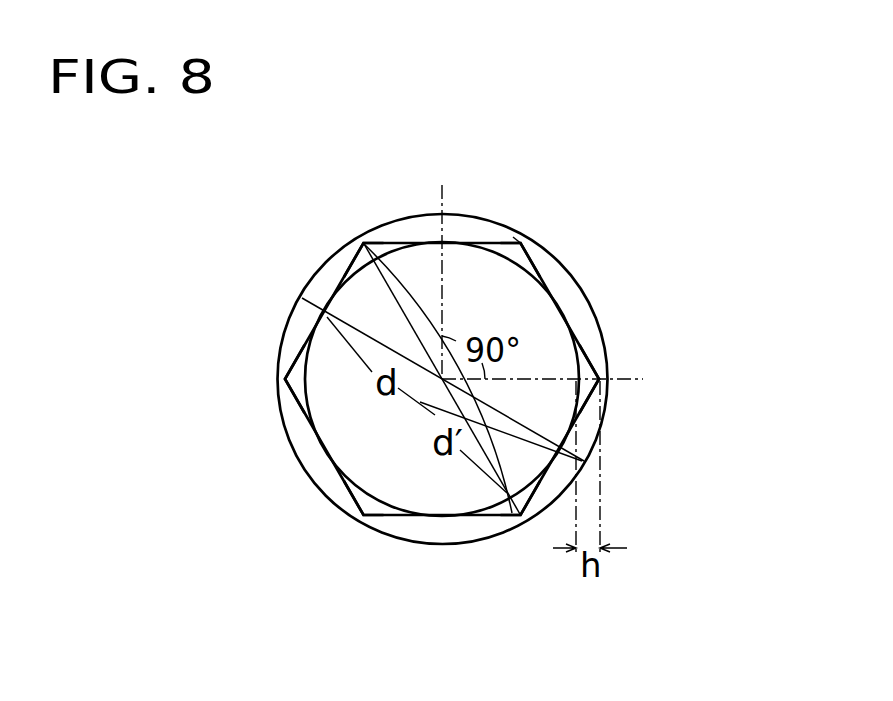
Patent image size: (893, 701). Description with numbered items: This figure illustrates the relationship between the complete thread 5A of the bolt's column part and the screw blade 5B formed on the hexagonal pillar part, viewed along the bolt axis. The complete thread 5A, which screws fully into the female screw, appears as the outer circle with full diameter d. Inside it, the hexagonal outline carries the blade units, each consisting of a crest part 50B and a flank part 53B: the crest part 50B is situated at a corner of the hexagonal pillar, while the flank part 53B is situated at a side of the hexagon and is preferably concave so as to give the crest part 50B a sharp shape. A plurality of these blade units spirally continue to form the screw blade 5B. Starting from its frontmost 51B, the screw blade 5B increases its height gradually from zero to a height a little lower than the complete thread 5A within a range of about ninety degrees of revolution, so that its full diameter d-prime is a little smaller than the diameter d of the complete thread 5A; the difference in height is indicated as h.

The complete thread 5A is at (601, 332).
The screw blade 5B is at (530, 263).
The crest part 50B is at (507, 247).
The frontmost 51B is at (513, 237).
The flank part 53B is at (448, 243).